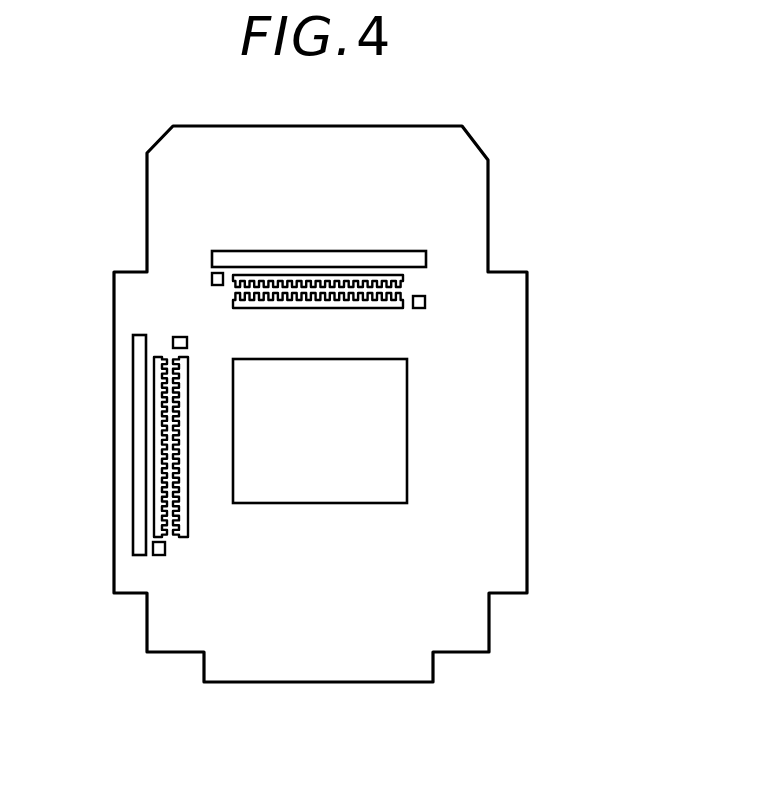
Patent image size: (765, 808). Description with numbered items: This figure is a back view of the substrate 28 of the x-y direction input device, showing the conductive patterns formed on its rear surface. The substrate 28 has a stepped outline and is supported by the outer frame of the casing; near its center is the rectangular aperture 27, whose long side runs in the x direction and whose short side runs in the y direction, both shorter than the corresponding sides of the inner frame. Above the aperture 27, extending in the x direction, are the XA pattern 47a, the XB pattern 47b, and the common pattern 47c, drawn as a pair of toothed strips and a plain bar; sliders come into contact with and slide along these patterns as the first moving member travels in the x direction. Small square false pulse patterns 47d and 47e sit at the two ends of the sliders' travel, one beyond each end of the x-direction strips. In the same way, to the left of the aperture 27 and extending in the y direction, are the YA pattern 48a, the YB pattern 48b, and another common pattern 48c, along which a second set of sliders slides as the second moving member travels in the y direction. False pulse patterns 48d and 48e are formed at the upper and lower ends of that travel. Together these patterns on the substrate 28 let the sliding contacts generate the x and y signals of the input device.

The aperture 27 is at (392, 475).
The substrate 28 is at (528, 357).
The XA pattern 47a is at (312, 309).
The XB pattern 47b is at (404, 278).
The common pattern 47c is at (332, 251).
The false pulse pattern 47d is at (425, 308).
The false pulse pattern 47e is at (212, 274).
The YA pattern 48a is at (186, 532).
The YB pattern 48b is at (158, 357).
The common pattern 48c is at (133, 483).
The false pulse pattern 48d is at (187, 343).
The false pulse pattern 48e is at (163, 556).